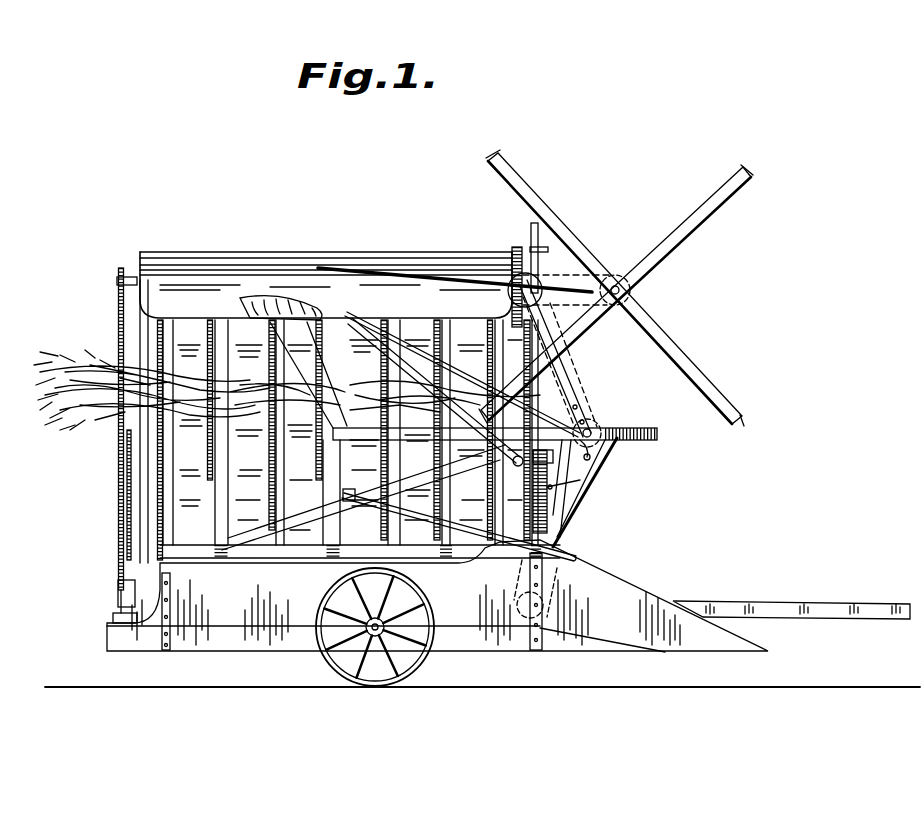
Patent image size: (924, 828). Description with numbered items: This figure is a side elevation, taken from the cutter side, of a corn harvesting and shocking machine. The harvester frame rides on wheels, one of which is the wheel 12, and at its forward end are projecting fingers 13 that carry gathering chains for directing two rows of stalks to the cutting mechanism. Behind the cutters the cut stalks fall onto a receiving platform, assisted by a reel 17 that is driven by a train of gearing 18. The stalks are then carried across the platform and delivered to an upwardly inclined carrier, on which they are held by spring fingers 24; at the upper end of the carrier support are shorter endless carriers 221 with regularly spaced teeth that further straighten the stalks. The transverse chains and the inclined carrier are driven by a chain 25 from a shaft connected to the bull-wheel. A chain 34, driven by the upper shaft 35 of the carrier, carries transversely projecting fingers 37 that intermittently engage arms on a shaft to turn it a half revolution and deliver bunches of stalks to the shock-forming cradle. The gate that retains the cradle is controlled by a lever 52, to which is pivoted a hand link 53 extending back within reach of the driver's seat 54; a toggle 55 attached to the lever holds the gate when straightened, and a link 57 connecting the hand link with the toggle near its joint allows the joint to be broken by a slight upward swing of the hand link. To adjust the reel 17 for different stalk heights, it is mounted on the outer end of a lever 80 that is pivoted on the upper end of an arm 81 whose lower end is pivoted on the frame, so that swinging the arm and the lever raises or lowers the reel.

The wheel 12 is at (430, 660).
The projecting fingers 13 is at (775, 651).
The reel 17 is at (650, 260).
The train of gearing 18 is at (580, 317).
The spring fingers 24 is at (222, 510).
The chain 25 is at (126, 515).
The chain 34 is at (522, 270).
The upper shaft 35 is at (132, 277).
The transversely projecting fingers 37 is at (537, 240).
The lever 52 is at (580, 497).
The hand link 53 is at (357, 330).
The driver's seat 54 is at (284, 300).
The toggle 55 is at (583, 478).
The link 57 is at (597, 433).
The lever 80 is at (415, 270).
The arm 81 is at (560, 373).
The shorter endless carriers 221 is at (208, 360).